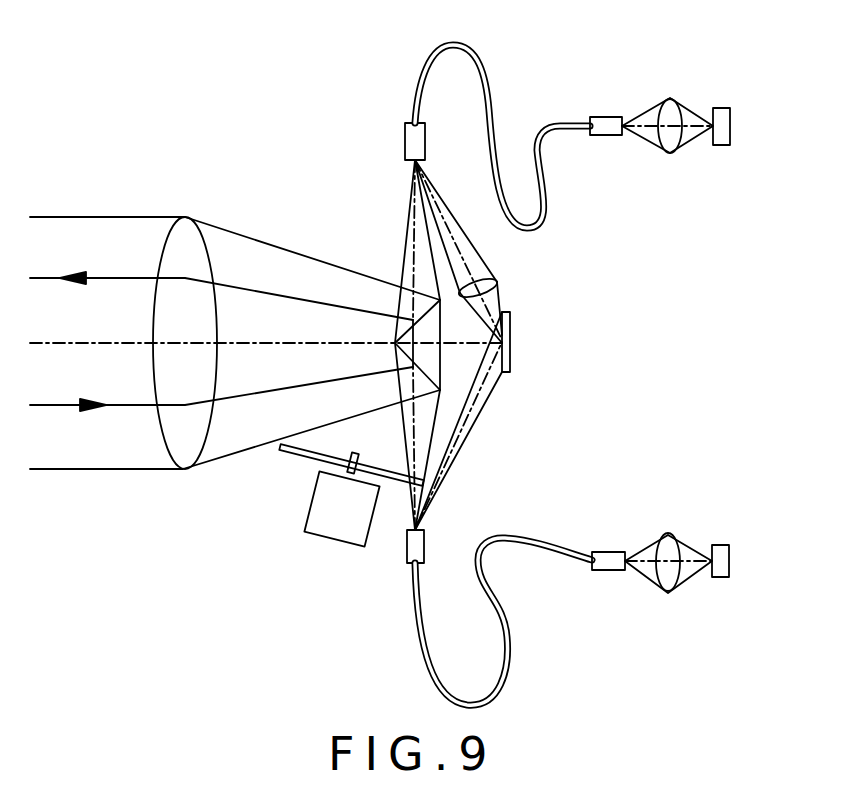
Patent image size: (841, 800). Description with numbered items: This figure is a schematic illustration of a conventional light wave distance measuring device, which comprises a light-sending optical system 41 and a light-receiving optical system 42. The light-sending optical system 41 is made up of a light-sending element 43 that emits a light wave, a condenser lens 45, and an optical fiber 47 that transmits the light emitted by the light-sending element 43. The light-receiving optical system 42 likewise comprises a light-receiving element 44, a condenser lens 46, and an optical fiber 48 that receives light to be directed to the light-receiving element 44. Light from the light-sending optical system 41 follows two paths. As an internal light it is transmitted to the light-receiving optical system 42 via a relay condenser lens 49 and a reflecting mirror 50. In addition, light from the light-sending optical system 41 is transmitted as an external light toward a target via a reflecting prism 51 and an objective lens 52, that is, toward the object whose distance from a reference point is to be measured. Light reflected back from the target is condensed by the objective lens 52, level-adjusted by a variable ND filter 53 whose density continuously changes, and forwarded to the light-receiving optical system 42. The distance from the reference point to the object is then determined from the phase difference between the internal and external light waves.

The light-sending optical system 41 is at (695, 119).
The light-receiving optical system 42 is at (688, 557).
The light-sending element 43 is at (730, 136).
The light-receiving element 44 is at (729, 575).
The condenser lens 45 is at (670, 155).
The condenser lens 46 is at (668, 595).
The optical fiber 47 is at (546, 207).
The optical fiber 48 is at (532, 546).
The relay condenser lens 49 is at (495, 282).
The reflecting mirror 50 is at (510, 348).
The reflecting prism 51 is at (443, 362).
The objective lens 52 is at (160, 250).
The variable ND filter 53 is at (283, 449).